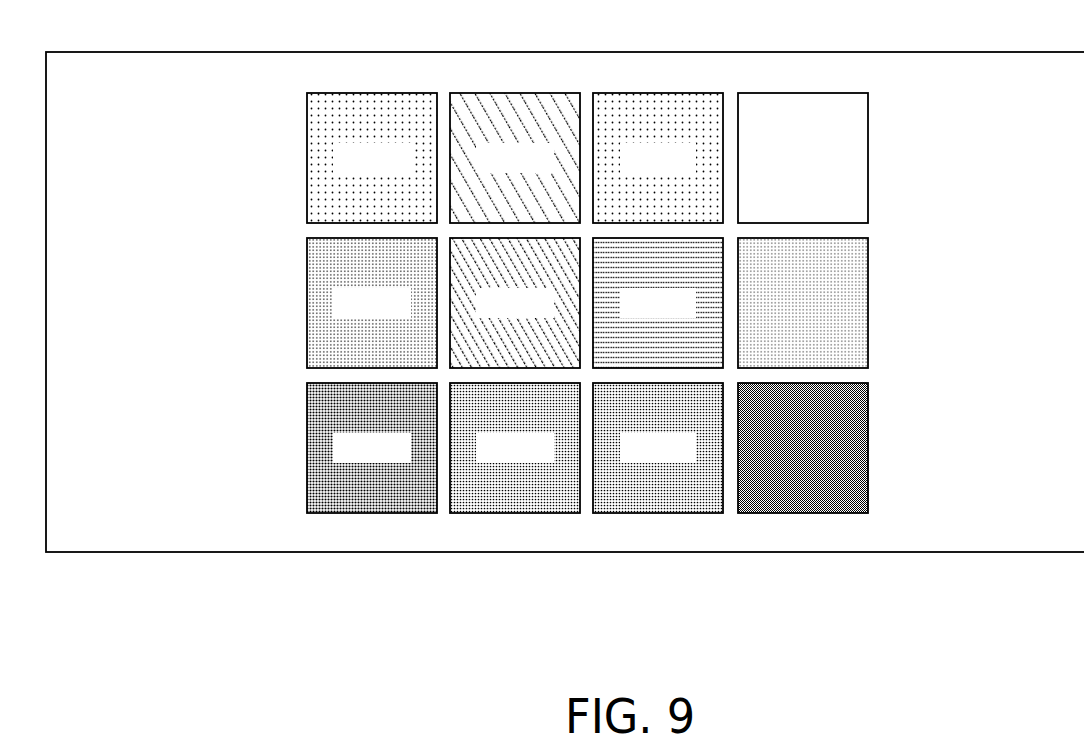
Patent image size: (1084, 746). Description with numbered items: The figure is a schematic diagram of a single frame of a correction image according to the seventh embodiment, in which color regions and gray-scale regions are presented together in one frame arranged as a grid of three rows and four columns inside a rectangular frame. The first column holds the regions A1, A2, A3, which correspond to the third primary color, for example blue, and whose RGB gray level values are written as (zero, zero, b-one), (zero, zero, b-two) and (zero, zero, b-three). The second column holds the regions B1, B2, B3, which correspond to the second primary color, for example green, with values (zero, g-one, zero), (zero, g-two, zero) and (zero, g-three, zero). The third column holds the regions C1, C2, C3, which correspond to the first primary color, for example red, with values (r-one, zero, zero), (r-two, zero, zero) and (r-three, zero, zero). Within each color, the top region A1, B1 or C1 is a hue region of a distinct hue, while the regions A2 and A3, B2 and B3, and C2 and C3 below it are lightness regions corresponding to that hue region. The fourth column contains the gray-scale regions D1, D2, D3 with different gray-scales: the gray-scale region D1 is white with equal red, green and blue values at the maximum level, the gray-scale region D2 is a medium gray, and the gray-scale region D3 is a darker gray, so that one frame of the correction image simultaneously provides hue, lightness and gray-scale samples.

The region A1 is at (307, 157).
The region A2 is at (307, 300).
The region A3 is at (307, 445).
The region B1 is at (517, 93).
The region B2 is at (460, 238).
The region B3 is at (515, 513).
The region C1 is at (660, 93).
The region C2 is at (605, 238).
The region C3 is at (659, 513).
The gray-scale region D1 is at (868, 157).
The gray-scale region D2 is at (868, 302).
The gray-scale region D3 is at (868, 447).